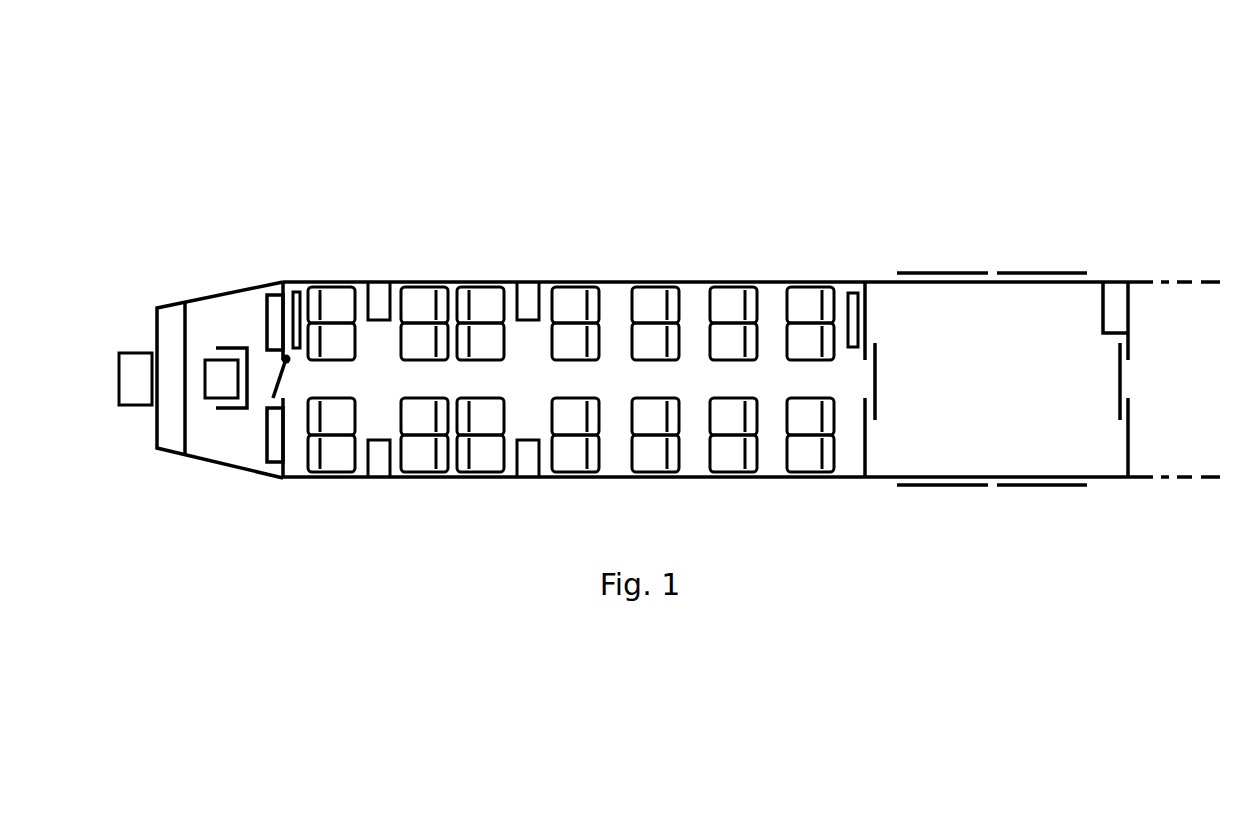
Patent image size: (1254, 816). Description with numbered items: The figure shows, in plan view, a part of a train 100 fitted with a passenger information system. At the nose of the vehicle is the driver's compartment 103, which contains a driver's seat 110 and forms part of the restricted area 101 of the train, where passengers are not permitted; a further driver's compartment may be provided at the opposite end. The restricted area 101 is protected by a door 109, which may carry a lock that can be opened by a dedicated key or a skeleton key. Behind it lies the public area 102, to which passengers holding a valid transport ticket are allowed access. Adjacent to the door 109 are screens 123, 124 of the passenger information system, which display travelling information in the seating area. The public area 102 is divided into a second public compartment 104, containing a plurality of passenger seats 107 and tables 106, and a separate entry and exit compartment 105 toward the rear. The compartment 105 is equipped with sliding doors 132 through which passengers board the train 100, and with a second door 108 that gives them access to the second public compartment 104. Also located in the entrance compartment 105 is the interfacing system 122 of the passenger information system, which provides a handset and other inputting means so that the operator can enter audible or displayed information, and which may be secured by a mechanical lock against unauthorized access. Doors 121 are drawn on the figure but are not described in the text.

The train 100 is at (818, 88).
The restricted area 101 is at (285, 210).
The public area 102 is at (1200, 210).
The driver's compartment 103 is at (198, 452).
The second public compartment 104 is at (571, 379).
The entry and exit compartment 105 is at (996, 379).
The tables 106 is at (380, 288).
The passenger seats 107 is at (423, 295).
The second door 108 is at (875, 375).
The door 109 is at (277, 390).
The driver's seat 110 is at (227, 396).
The entry doors 121 is at (274, 292).
The interfacing system 122 is at (1115, 288).
The screen 123 is at (853, 290).
The screen 124 is at (297, 290).
The sliding doors 132 is at (928, 272).